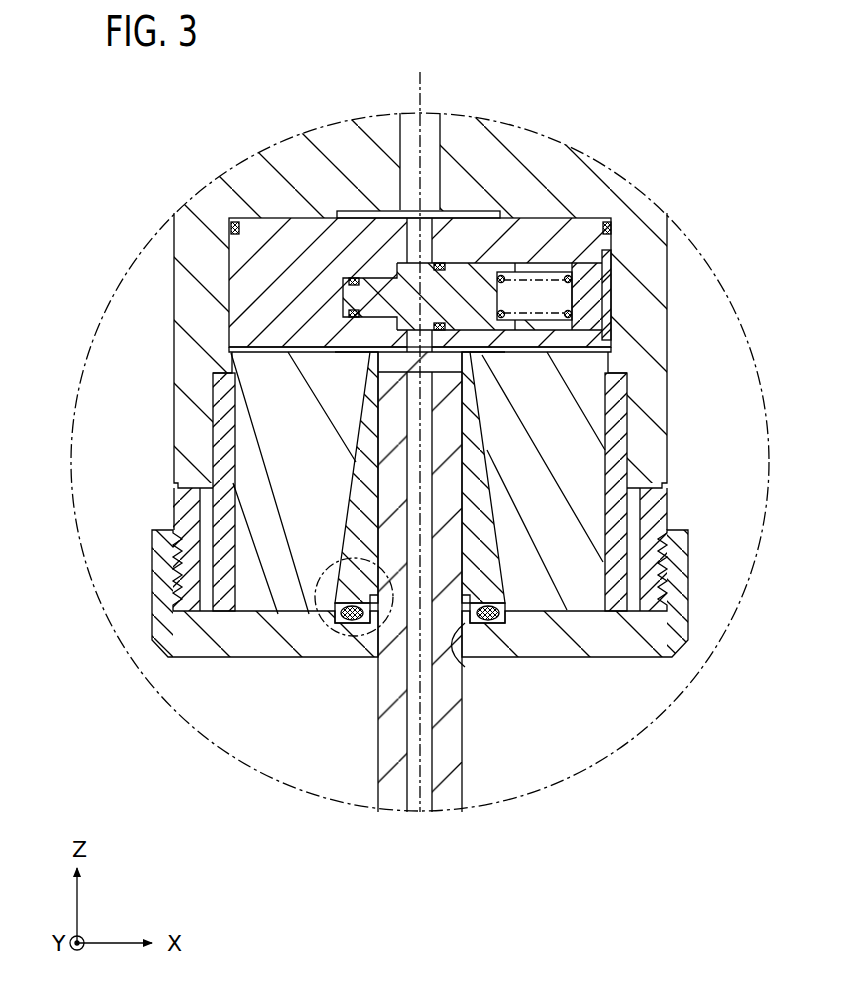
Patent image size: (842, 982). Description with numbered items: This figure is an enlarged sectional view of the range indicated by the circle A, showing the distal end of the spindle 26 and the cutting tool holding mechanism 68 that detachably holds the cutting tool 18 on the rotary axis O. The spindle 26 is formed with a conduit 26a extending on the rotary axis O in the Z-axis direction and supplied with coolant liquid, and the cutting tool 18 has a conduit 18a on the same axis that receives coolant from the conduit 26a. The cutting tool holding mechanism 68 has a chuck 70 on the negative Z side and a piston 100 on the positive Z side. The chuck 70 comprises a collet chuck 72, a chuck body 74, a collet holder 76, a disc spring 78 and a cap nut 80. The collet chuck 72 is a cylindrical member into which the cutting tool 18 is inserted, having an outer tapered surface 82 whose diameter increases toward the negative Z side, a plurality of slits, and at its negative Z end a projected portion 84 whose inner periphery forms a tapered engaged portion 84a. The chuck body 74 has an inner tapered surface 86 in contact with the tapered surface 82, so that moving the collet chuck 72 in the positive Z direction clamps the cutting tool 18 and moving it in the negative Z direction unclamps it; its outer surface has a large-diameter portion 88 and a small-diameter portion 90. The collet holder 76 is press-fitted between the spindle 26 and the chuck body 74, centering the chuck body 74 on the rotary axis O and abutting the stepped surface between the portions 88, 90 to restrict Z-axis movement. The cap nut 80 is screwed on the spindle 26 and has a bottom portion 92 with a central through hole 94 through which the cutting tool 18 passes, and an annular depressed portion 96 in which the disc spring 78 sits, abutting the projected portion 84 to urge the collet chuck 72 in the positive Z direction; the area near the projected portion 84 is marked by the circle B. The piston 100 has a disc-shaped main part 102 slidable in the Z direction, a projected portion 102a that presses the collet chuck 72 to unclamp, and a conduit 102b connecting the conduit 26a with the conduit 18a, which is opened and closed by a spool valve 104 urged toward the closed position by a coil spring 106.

The cutting tool 18 is at (447, 732).
The conduit 18a is at (447, 787).
The spindle 26 is at (555, 157).
The conduit 26a is at (410, 131).
The cutting tool holding mechanism 68 is at (205, 207).
The chuck 70 is at (193, 419).
The collet chuck 72 is at (352, 518).
The chuck body 74 is at (253, 452).
The collet holder 76 is at (613, 403).
The disc spring 78 is at (505, 608).
The cap nut 80 is at (605, 633).
The tapered surface 82 is at (487, 505).
The projected portion 84 is at (355, 593).
The engaged portion 84a is at (378, 652).
The tapered surface 86 is at (487, 543).
The large-diameter portion 88 is at (613, 363).
The small-diameter portion 90 is at (605, 437).
The bottom portion 92 is at (552, 633).
The through hole 94 is at (447, 628).
The depressed portion 96 is at (338, 614).
The piston 100 is at (225, 276).
The main part 102 is at (257, 320).
The projected portion 102a is at (372, 349).
The conduit 102b is at (428, 216).
The spool valve 104 is at (468, 273).
The coil spring 106 is at (537, 270).
The circle A is at (620, 173).
The circle B is at (332, 578).
The rotary axis O is at (421, 430).